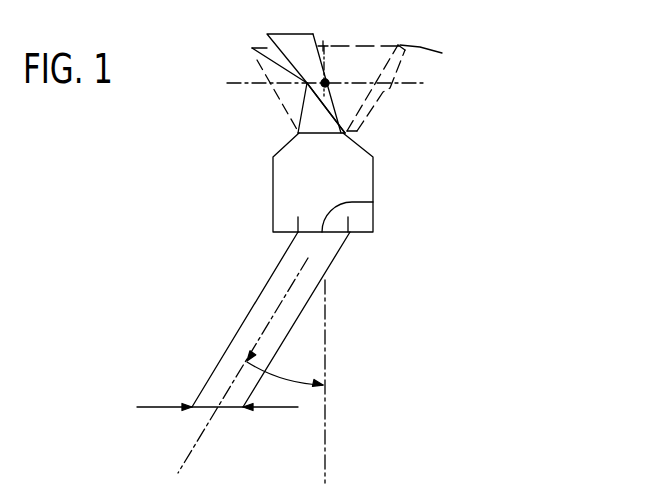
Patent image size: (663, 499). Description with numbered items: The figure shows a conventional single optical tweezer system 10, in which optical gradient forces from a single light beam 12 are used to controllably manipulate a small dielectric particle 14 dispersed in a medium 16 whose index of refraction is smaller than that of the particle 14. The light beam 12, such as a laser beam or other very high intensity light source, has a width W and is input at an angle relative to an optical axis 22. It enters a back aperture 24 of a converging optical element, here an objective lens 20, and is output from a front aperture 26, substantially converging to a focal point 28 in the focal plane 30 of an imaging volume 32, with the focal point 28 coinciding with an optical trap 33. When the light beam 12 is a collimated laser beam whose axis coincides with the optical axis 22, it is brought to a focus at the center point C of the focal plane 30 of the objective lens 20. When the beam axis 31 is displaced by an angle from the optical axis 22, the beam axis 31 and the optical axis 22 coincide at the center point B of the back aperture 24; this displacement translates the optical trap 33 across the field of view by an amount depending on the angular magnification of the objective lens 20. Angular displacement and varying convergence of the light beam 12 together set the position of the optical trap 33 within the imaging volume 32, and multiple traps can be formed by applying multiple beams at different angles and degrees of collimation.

The optical tweezer system 10 is at (436, 309).
The light beam 12 is at (224, 355).
The dielectric particle 14 is at (307, 83).
The medium 16 is at (333, 78).
The objective lens 20 is at (348, 177).
The optical axis 22 is at (326, 413).
The back aperture 24 is at (350, 233).
The front aperture 26 is at (315, 137).
The focal point 28 is at (300, 89).
The optical trap 33 is at (300, 89).
The focal plane 30 is at (222, 83).
The beam axis 31 is at (190, 455).
The imaging volume 32 is at (384, 88).
The center point of the back aperture B is at (373, 204).
The center point of the focal plane C is at (327, 76).
The width of the light beam W is at (199, 437).